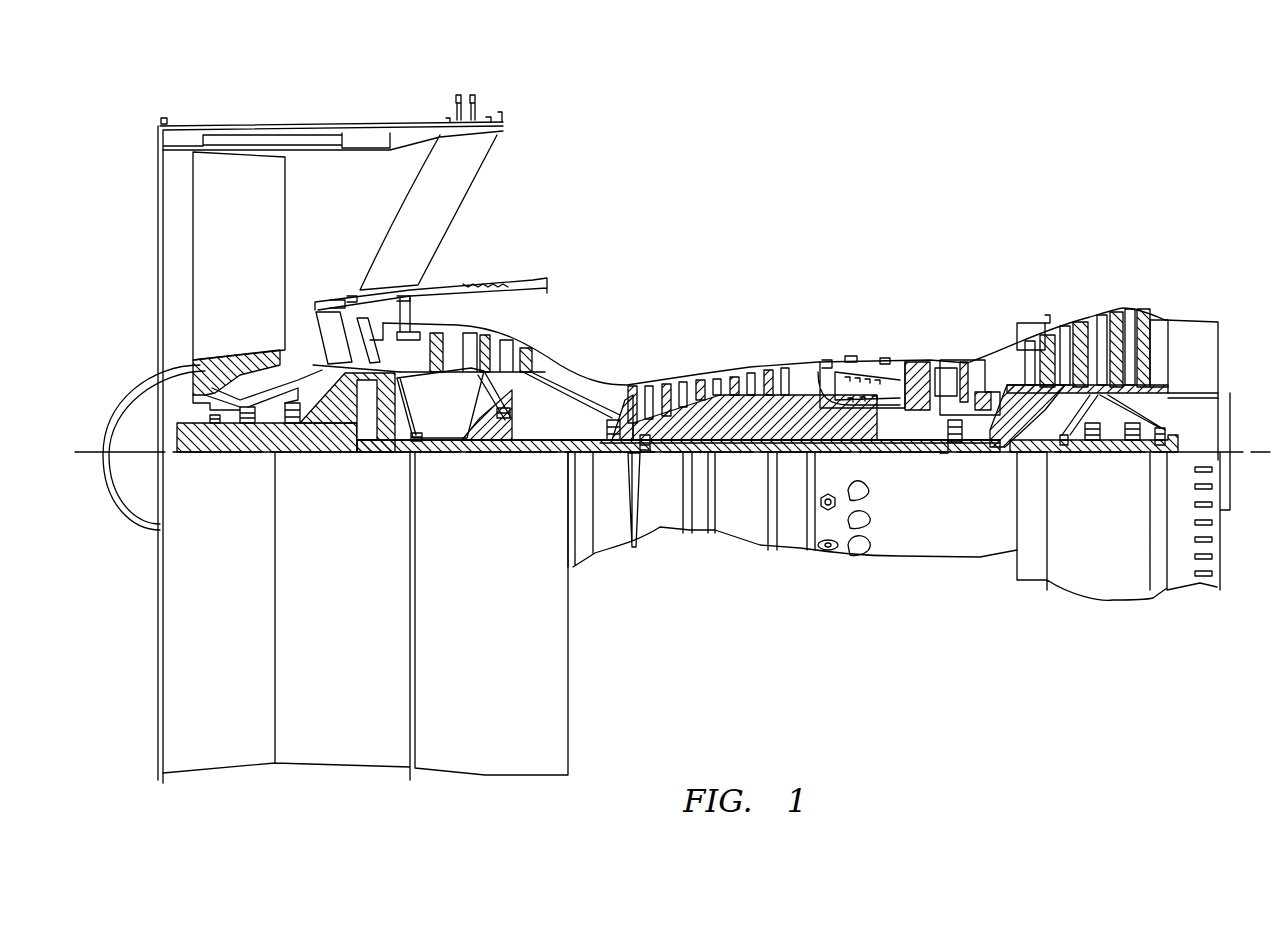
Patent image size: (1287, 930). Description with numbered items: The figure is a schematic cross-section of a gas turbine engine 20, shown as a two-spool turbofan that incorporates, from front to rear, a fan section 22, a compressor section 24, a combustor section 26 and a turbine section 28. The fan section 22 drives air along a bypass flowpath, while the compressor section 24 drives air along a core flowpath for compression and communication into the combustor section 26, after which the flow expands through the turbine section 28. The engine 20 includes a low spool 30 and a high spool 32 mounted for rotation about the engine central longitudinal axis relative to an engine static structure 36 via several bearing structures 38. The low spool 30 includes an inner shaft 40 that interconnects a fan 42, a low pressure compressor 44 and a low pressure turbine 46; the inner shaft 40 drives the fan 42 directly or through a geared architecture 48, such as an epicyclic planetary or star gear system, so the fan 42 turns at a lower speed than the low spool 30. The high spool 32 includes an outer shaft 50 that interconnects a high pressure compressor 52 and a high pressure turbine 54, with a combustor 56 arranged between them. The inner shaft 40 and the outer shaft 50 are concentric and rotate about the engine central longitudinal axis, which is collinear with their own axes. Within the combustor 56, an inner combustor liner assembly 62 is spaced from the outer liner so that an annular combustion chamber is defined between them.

The gas turbine engine 20 is at (986, 178).
The fan section 22 is at (153, 103).
The compressor section 24 is at (418, 239).
The combustor section 26 is at (820, 239).
The turbine section 28 is at (1160, 239).
The low spool 30 is at (747, 462).
The high spool 32 is at (780, 392).
The engine static structure 36 is at (793, 560).
The bearing structures 38 is at (195, 517).
The inner shaft 40 is at (593, 453).
The fan 42 is at (243, 267).
The low pressure compressor 44 is at (495, 340).
The low pressure turbine 46 is at (1088, 318).
The geared architecture 48 is at (358, 425).
The outer shaft 50 is at (870, 438).
The high pressure compressor 52 is at (728, 420).
The high pressure turbine 54 is at (945, 362).
The combustor 56 is at (872, 388).
The inner combustor liner assembly 62 is at (645, 442).